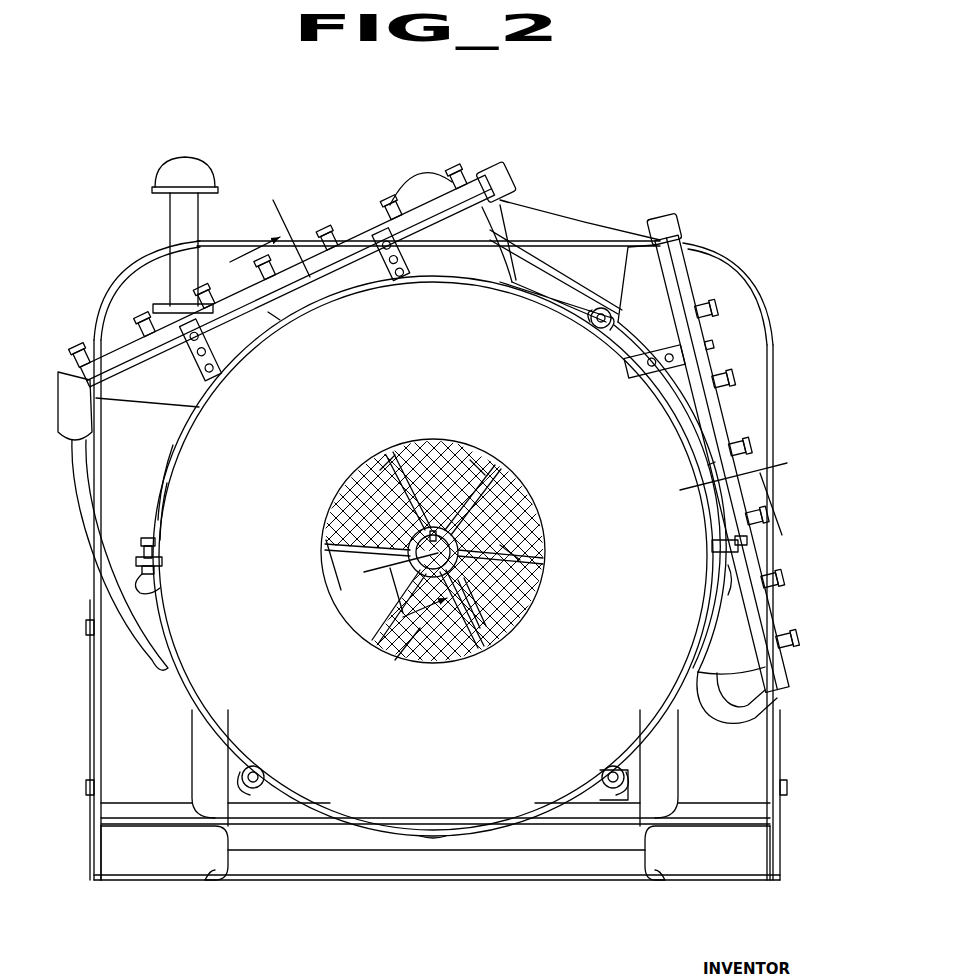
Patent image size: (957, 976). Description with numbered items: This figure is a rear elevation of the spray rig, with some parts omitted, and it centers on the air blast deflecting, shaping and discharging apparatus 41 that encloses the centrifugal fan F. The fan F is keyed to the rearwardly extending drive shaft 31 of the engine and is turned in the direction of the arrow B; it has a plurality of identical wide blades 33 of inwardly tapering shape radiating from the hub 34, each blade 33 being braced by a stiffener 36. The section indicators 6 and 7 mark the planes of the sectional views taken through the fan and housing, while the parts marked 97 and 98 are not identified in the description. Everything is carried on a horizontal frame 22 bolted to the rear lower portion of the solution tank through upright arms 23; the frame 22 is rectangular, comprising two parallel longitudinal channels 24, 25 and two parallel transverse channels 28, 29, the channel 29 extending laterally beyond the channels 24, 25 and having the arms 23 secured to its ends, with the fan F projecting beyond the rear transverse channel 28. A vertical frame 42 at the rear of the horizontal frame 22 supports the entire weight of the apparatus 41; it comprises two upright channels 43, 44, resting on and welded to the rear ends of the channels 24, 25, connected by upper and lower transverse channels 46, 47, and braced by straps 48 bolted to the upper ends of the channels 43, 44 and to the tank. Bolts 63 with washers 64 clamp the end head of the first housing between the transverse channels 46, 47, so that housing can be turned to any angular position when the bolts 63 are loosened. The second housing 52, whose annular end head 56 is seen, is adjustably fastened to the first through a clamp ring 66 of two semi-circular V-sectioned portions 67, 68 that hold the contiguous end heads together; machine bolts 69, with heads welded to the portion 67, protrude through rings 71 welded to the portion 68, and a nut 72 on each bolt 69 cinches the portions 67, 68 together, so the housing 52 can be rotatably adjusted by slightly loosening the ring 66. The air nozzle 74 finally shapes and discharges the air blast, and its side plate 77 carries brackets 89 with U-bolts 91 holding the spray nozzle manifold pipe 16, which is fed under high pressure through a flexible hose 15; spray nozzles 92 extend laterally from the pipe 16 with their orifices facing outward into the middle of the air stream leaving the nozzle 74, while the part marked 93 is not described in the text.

The housing 52 is at (262, 677).
The semi-circular V-sectioned portion 67 is at (170, 445).
The clamp ring 66 is at (162, 483).
The annular end head 56 is at (440, 506).
The blade 33 is at (395, 458).
The drive shaft 31 is at (462, 538).
The hub 34 is at (452, 548).
The stiffener 36 is at (425, 455).
The bar 97 is at (335, 588).
The bar 98 is at (400, 655).
The section line 7 is at (575, 538).
The section line 6 is at (356, 406).
The centrifugal fan F is at (480, 630).
The arrow B is at (293, 597).
The straps 48 is at (535, 252).
The transverse channel 46 is at (596, 322).
The air blast deflecting, shaping and discharging apparatus 41 is at (520, 215).
The air nozzle 74 is at (505, 210).
The spray nozzle manifold pipe 16 is at (382, 222).
The spray nozzles 92 is at (82, 342).
The brackets 89 is at (376, 280).
The U-bolts 91 is at (352, 232).
The bracket 93 is at (281, 320).
The side plate 77 is at (430, 440).
The flexible hose 15 is at (95, 553).
The machine bolts 69 is at (158, 545).
The rings 71 is at (163, 564).
The nut 72 is at (142, 580).
The horizontal frame 22 is at (258, 881).
The longitudinal channel 24 is at (212, 882).
The longitudinal channel 25 is at (652, 880).
The transverse channel 28 is at (355, 881).
The transverse channel 29 is at (118, 881).
The upright arms 23 is at (92, 719).
The upright channel 43 is at (210, 784).
The upright channel 44 is at (658, 783).
The vertical frame 42 is at (192, 746).
The bolts 63 is at (268, 782).
The washers 64 is at (260, 768).
The transverse channel 47 is at (620, 790).
The semi-circular V-sectioned portion 68 is at (480, 838).